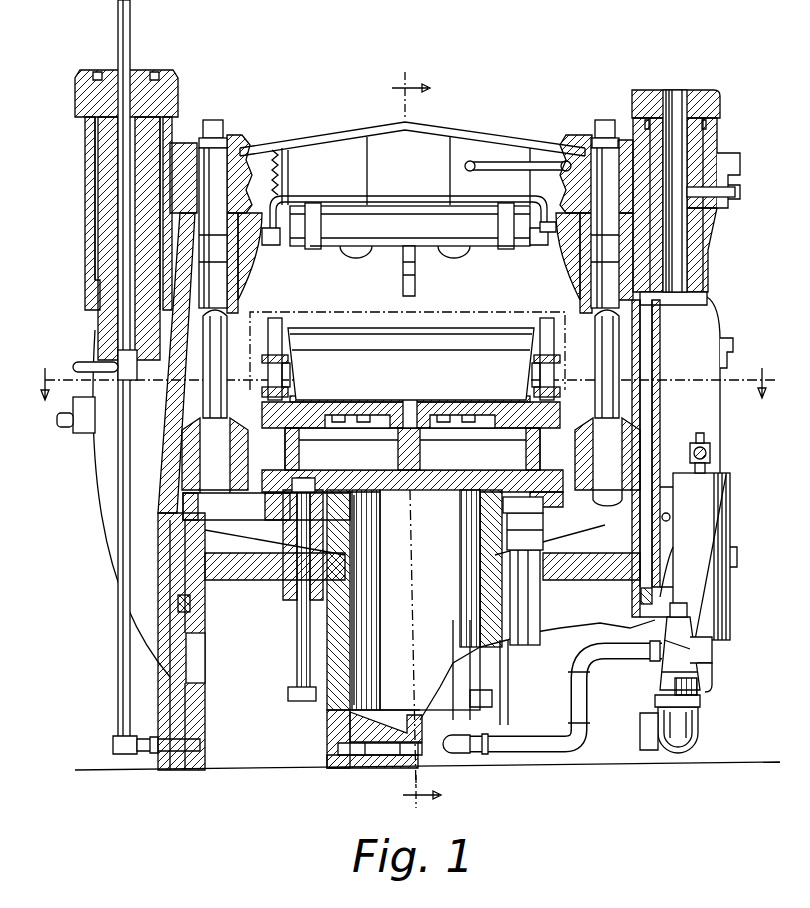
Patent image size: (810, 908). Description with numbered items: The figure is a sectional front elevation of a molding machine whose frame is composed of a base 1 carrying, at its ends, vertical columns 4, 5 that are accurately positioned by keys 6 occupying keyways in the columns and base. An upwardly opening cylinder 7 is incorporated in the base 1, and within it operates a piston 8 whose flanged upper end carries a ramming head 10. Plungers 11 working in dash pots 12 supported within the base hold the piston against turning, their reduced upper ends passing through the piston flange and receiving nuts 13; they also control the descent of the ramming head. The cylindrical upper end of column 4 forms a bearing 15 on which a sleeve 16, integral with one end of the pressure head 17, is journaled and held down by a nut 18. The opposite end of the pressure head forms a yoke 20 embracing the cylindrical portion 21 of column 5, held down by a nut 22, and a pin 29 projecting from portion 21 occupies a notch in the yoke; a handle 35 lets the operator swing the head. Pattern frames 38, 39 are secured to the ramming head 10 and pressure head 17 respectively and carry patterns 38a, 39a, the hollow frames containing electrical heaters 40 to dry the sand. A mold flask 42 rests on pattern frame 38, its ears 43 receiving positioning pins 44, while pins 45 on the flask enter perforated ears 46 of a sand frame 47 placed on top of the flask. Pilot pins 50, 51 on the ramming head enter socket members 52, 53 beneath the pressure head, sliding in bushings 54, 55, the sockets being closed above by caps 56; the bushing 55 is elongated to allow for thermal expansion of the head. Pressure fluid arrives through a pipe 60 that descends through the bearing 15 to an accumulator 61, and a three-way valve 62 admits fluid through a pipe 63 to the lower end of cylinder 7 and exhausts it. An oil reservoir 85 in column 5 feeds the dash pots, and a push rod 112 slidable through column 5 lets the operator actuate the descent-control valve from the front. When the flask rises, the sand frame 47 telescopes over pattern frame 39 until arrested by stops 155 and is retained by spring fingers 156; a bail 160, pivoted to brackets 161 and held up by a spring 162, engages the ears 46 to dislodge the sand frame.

The base 1 is at (252, 580).
The column 4 is at (82, 497).
The column 5 is at (738, 418).
The key 6 is at (190, 610).
The cylinder 7 is at (345, 626).
The piston 8 is at (352, 560).
The ramming head 10 is at (460, 492).
The plunger 11 is at (340, 480).
The dash pot 12 is at (292, 620).
The nut 13 is at (305, 470).
The bearing 15 is at (96, 202).
The sleeve 16 is at (86, 165).
The pressure head 17 is at (325, 150).
The nut 18 is at (176, 82).
The yoke 20 is at (720, 140).
The cylindrical portion 21 is at (705, 238).
The nut 22 is at (720, 96).
The pin 29 is at (742, 194).
The handle 35 is at (505, 162).
The pattern frame 38 is at (486, 396).
The pattern 38a is at (330, 396).
The pattern frame 39 is at (410, 249).
The pattern 39a is at (355, 258).
The electrical heater 40 is at (380, 236).
The mold flask 42 is at (480, 355).
The ear 43 is at (266, 388).
The positioning pin 44 is at (546, 368).
The positioning pin 45 is at (285, 332).
The perforated ear 46 is at (262, 355).
The sand frame 47 is at (368, 345).
The pilot pin 50 is at (204, 360).
The pilot pin 51 is at (620, 400).
The socket member 52 is at (240, 298).
The socket member 53 is at (582, 284).
The bushing 54 is at (215, 262).
The bushing 55 is at (608, 262).
The cap 56 is at (222, 124).
The pipe 60 is at (131, 21).
The accumulator 61 is at (96, 236).
The valve 62 is at (712, 657).
The pipe 63 is at (590, 693).
The oil reservoir 85 is at (698, 536).
The push rod 112 is at (670, 517).
The stop 155 is at (276, 248).
The spring finger 156 is at (318, 252).
The bail 160 is at (405, 196).
The bracket 161 is at (548, 240).
The spring 162 is at (280, 165).